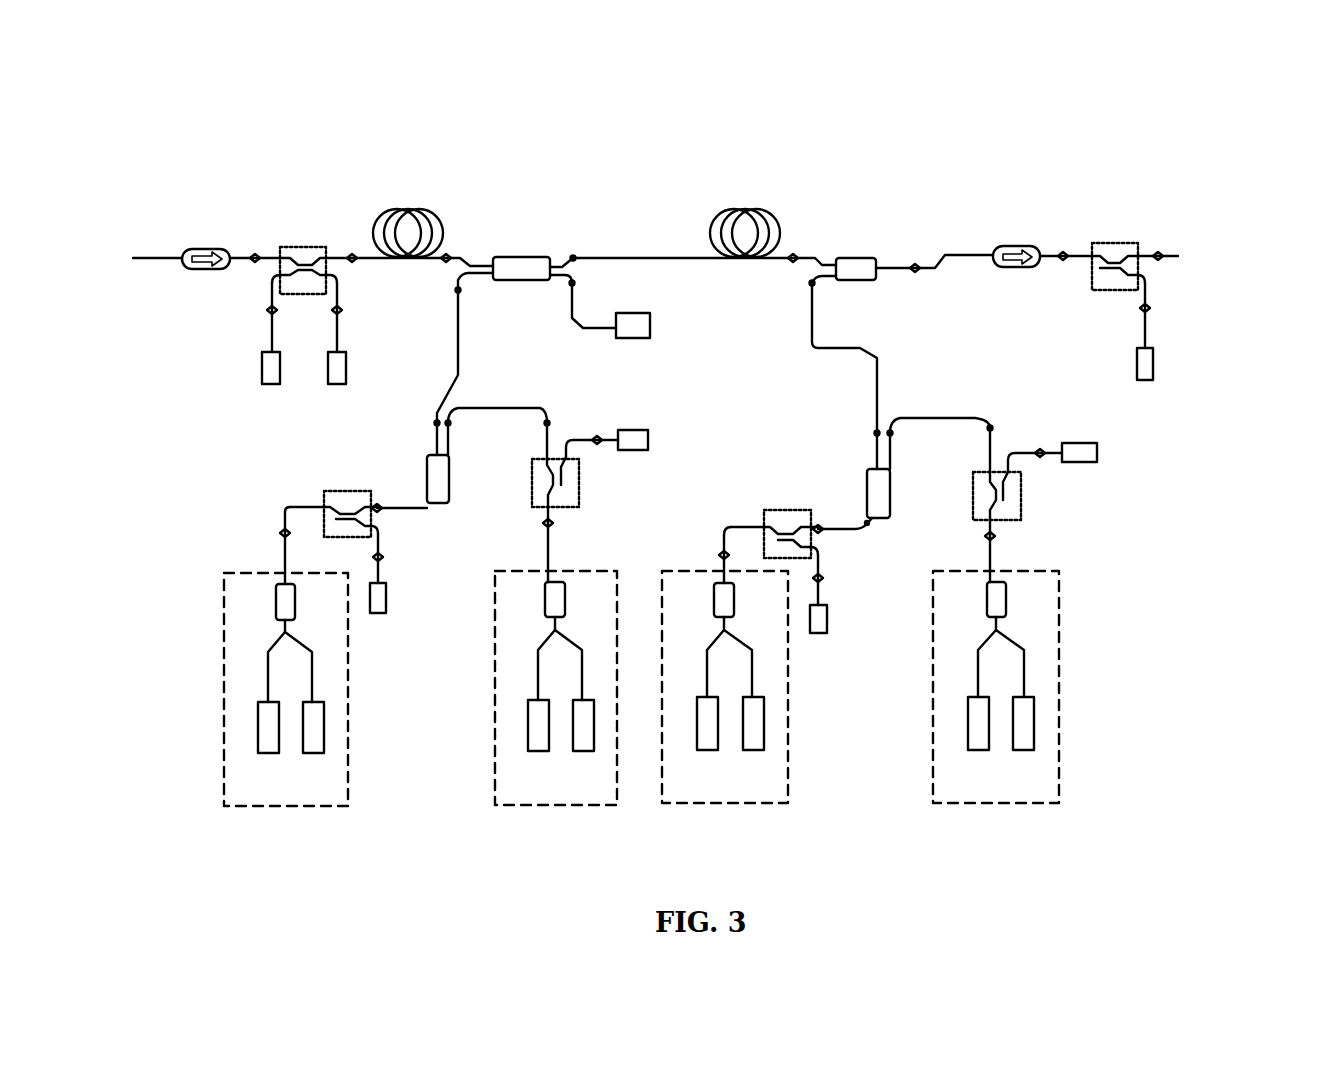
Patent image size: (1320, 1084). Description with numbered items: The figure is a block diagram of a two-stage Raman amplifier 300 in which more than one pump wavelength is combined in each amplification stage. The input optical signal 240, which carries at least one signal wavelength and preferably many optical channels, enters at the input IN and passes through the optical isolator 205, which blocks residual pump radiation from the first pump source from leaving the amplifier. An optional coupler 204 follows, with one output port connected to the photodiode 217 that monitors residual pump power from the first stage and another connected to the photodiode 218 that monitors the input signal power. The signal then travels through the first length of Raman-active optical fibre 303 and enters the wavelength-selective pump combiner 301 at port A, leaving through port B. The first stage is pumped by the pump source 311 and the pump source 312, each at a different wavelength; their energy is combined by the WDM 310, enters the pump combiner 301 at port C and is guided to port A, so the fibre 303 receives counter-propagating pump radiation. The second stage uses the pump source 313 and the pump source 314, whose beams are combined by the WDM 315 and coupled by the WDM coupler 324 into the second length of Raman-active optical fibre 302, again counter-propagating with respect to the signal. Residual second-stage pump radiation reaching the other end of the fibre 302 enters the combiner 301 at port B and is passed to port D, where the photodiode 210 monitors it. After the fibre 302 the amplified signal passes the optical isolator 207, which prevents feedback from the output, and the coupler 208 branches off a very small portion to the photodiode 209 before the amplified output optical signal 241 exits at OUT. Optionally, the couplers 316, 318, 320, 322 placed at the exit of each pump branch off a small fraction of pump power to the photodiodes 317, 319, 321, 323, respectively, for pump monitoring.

The two-stage Raman amplifier 300 is at (862, 160).
The input optical signal 240 is at (133, 258).
The amplified output optical signal 241 is at (1178, 256).
The optical isolator 205 is at (200, 250).
The optical isolator 207 is at (1018, 246).
The coupler 204 is at (303, 247).
The coupler 208 is at (1112, 243).
The photodiode 217 is at (262, 367).
The photodiode 218 is at (330, 383).
The photodiode 209 is at (1145, 380).
The photodiode 210 is at (640, 338).
The first length of Raman-active optical fibre 303 is at (410, 210).
The second length of Raman-active optical fibre 302 is at (745, 208).
The wavelength-selective pump combiner 301 is at (518, 257).
The WDM coupler 324 is at (849, 258).
The WDM 310 is at (443, 503).
The WDM 315 is at (866, 488).
The coupler 316 is at (336, 492).
The coupler 318 is at (579, 497).
The coupler 320 is at (782, 510).
The coupler 322 is at (1021, 497).
The photodiode 317 is at (378, 613).
The photodiode 319 is at (640, 428).
The photodiode 321 is at (818, 633).
The photodiode 323 is at (1098, 465).
The pump source 311 is at (228, 779).
The pump source 312 is at (497, 779).
The pump source 313 is at (788, 768).
The pump source 314 is at (1060, 686).